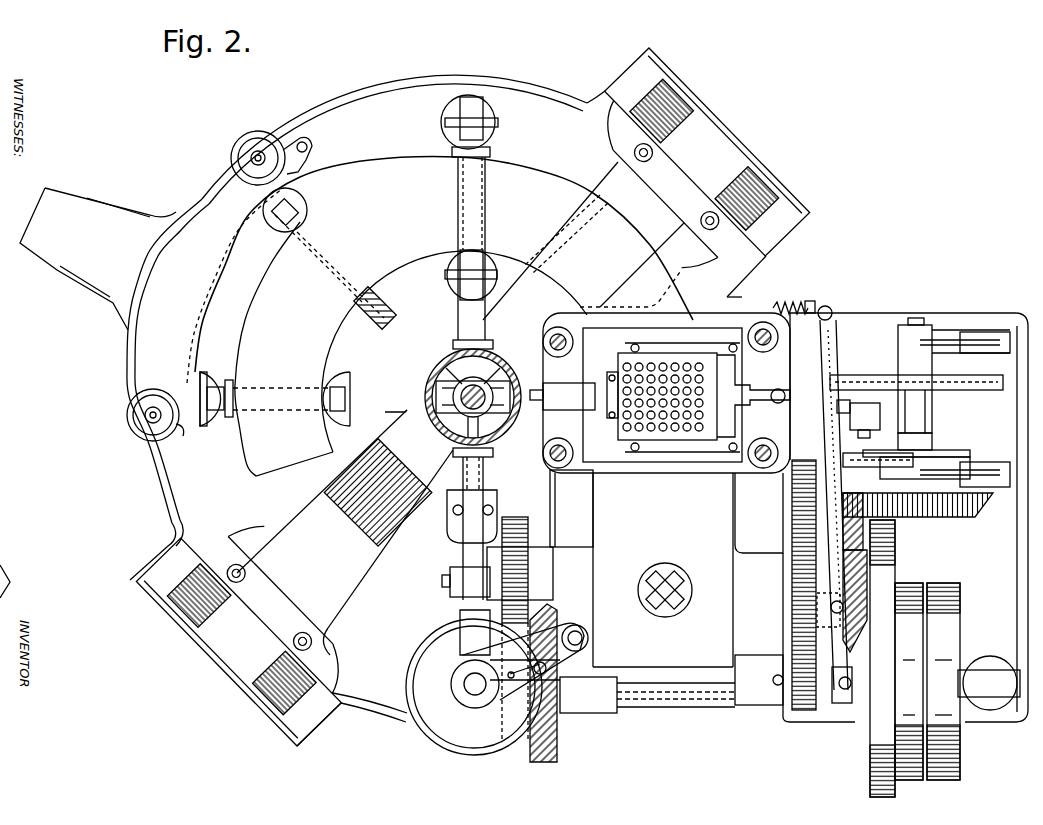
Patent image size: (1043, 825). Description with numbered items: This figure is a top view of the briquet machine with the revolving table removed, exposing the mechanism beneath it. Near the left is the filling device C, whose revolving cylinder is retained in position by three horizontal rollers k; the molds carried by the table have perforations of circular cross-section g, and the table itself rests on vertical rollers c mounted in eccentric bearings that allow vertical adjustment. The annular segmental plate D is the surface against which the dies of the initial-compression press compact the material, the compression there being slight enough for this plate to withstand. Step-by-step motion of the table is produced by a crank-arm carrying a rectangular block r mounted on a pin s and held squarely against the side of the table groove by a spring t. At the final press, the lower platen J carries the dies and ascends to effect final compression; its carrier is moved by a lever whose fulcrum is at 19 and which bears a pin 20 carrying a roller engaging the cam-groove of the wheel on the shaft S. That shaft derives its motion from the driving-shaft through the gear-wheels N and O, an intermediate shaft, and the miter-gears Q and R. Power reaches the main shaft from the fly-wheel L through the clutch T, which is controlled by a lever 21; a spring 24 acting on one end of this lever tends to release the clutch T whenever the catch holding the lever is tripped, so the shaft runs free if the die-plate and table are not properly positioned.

The annular segmental plate D is at (440, 270).
The lower platen J is at (660, 393).
The horizontal rollers k is at (255, 140).
The vertical rollers c is at (676, 580).
The filling device C is at (350, 374).
The spring 24 is at (787, 313).
The lever 21 is at (828, 350).
The pin 20 is at (837, 408).
The fulcrum 19 is at (865, 420).
The shaft S is at (920, 412).
The miter-gear R is at (970, 512).
The gear-wheel O is at (790, 503).
The fly-wheel L is at (887, 565).
The miter-gear Q is at (858, 634).
The gear-wheel N is at (800, 712).
The clutch T is at (843, 705).
The pin s is at (585, 632).
The rectangular block r is at (584, 648).
The spring t is at (527, 665).
The circle g is at (493, 700).